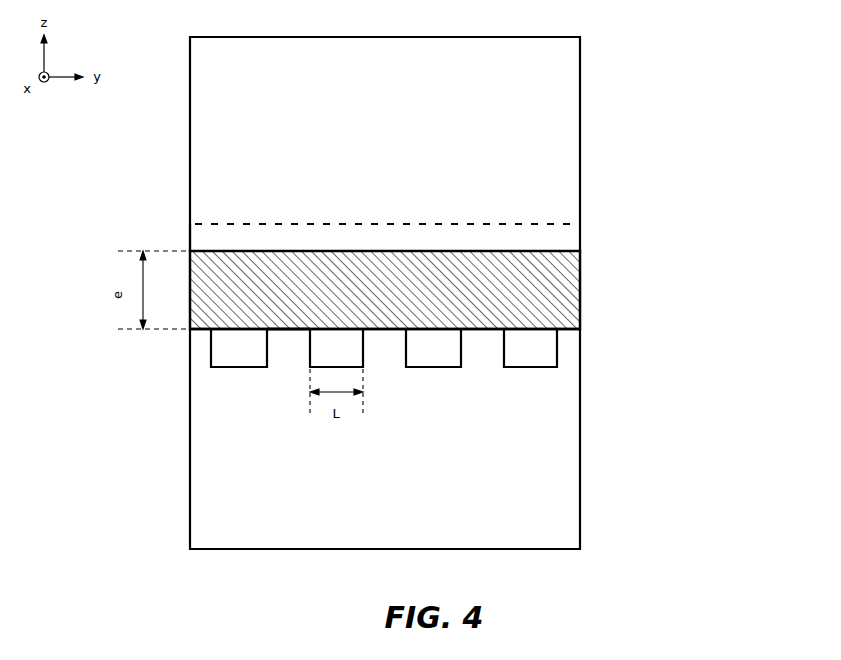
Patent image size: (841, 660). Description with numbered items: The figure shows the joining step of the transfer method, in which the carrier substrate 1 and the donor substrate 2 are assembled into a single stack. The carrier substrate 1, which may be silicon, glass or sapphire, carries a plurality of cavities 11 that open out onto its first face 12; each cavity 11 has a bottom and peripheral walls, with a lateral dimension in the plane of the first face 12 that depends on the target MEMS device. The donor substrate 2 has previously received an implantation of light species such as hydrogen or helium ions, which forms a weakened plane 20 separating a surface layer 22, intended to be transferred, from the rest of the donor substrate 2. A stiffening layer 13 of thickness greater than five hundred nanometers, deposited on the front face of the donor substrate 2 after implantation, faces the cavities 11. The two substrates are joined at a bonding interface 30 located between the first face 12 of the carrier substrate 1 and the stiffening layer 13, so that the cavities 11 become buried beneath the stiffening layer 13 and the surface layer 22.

The carrier substrate 1 is at (545, 530).
The donor substrate 2 is at (555, 58).
The cavities 11 is at (424, 346).
The first face 12 is at (287, 332).
The stiffening layer 13 is at (565, 272).
The weakened plane 20 is at (543, 223).
The surface layer 22 is at (210, 237).
The bonding interface 30 is at (588, 329).